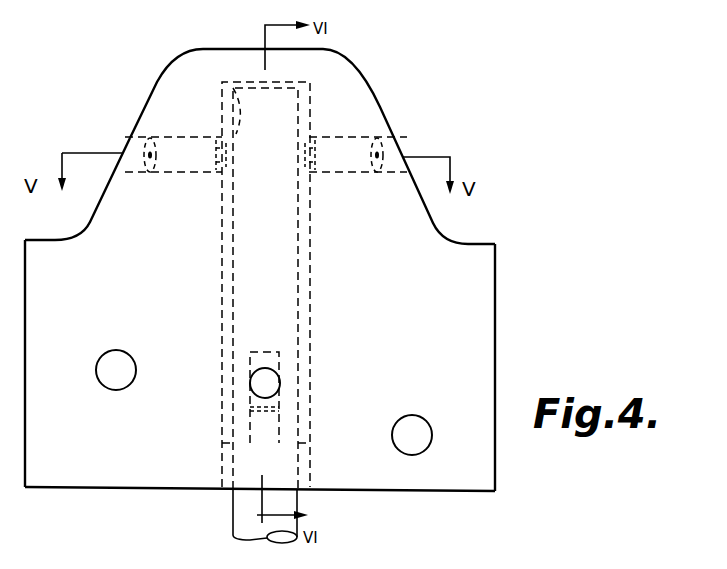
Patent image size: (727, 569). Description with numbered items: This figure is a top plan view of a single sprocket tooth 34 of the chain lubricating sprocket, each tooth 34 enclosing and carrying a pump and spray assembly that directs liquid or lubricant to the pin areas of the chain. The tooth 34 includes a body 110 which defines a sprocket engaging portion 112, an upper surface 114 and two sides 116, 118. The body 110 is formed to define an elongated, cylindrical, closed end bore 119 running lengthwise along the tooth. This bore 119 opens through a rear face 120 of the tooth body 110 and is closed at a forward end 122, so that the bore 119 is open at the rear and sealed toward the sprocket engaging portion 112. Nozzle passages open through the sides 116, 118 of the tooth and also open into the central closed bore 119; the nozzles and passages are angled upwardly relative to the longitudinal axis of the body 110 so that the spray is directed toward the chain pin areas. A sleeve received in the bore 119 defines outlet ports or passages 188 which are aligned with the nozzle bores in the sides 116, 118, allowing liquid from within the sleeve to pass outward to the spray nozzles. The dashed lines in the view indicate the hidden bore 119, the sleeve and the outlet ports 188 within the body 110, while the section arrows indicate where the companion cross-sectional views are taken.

The tooth 34 is at (418, 16).
The body 110 is at (288, 269).
The sprocket engaging portion 112 is at (150, 72).
The upper surface 114 is at (170, 265).
The side 116 is at (140, 117).
The side 118 is at (382, 105).
The closed end bore 119 is at (312, 493).
The rear face 120 is at (433, 495).
The forward end 122 is at (245, 83).
The outlet ports 188 is at (233, 82).